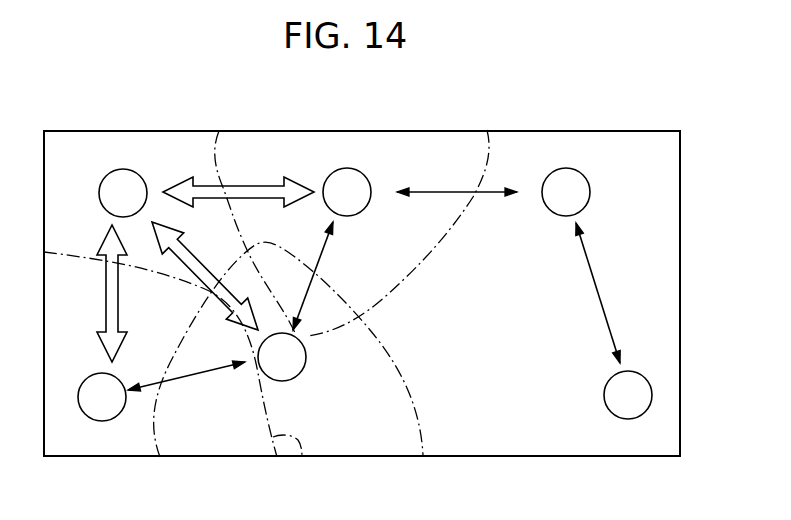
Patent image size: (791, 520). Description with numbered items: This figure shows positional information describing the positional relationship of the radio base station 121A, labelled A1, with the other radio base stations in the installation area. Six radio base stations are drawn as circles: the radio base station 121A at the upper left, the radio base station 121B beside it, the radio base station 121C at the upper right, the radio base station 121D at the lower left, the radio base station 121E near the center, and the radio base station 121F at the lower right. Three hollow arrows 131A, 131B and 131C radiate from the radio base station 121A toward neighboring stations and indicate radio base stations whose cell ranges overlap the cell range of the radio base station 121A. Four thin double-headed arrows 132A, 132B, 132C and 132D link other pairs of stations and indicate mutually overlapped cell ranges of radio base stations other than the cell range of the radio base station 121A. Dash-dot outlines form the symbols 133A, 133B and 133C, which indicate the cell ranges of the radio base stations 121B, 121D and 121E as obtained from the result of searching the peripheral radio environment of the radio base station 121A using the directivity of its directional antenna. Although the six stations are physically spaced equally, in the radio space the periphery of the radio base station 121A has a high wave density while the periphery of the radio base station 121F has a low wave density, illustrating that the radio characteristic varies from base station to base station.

The radio base station 121A is at (123, 169).
The radio base station 121B is at (347, 168).
The radio base station 121C is at (566, 168).
The radio base station 121D is at (102, 421).
The radio base station 121E is at (306, 362).
The radio base station 121F is at (628, 419).
The arrow 131A is at (245, 186).
The arrow 131B is at (106, 270).
The arrow 131C is at (185, 260).
The arrow 132A is at (188, 378).
The arrow 132B is at (322, 258).
The arrow 132C is at (452, 190).
The arrow 132D is at (590, 275).
The symbol 133A is at (302, 457).
The symbol 133B is at (412, 387).
The symbol 133C is at (418, 268).